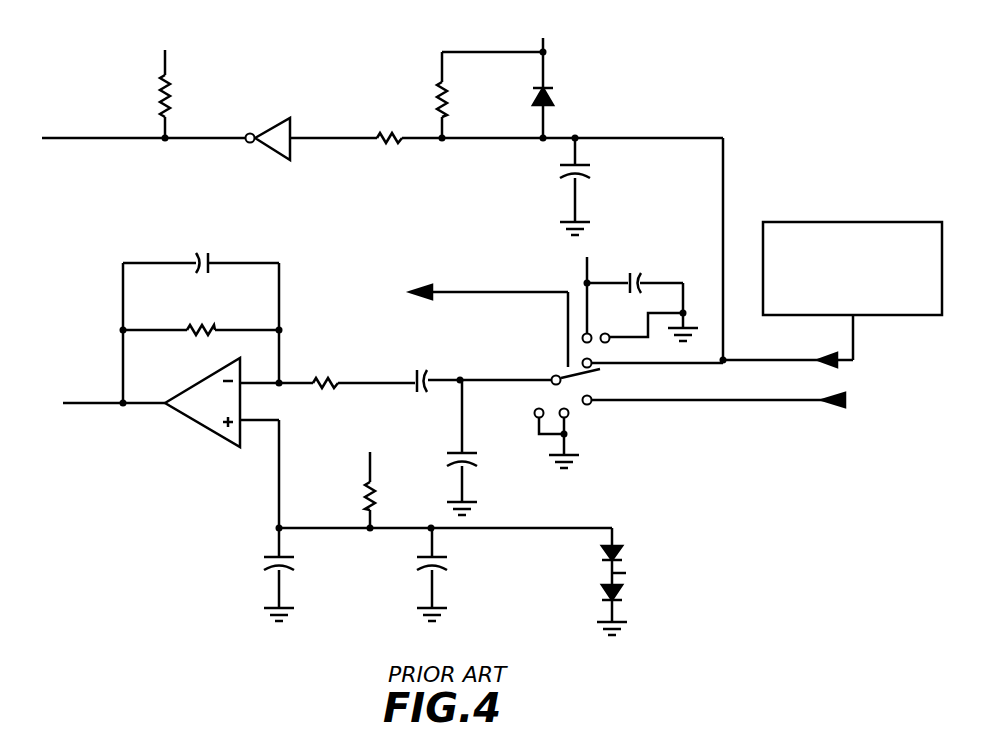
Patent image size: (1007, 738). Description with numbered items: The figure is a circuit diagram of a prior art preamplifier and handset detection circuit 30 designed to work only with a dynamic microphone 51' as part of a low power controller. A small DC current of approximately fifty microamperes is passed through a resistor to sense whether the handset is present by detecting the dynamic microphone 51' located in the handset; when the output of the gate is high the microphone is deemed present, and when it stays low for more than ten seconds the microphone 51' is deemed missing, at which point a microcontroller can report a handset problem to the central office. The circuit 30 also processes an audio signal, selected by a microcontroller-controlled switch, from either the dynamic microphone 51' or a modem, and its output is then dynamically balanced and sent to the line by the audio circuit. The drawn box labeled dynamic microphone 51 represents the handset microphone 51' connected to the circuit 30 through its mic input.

The preamplifier and handset detection circuit 30 is at (703, 58).
The dynamic microphone 51 is at (852, 252).
The dynamic microphone 51' is at (852, 268).